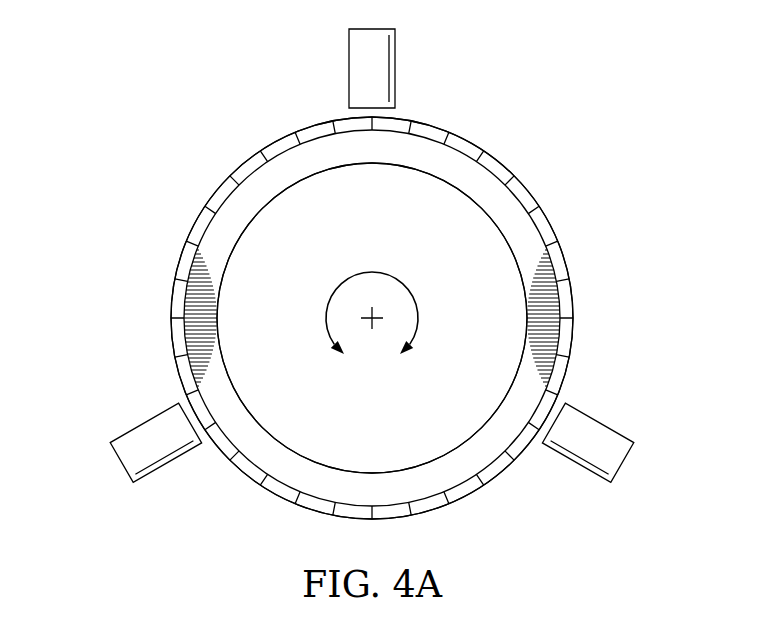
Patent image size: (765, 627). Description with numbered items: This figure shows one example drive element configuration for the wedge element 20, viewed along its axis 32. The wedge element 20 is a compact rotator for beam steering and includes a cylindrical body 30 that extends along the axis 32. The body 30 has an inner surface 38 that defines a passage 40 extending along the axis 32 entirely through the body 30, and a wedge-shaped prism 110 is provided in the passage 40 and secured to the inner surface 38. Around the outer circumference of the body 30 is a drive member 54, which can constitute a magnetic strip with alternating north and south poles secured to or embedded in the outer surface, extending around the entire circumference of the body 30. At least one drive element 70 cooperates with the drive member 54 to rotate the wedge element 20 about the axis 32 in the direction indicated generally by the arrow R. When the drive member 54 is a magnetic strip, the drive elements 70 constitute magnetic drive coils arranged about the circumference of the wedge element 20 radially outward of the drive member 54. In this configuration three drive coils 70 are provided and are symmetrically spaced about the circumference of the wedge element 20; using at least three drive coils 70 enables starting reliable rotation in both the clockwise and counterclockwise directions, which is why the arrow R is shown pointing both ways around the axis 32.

The wedge element 20 is at (122, 212).
The cylindrical body 30 is at (492, 214).
The axis 32 is at (372, 327).
The inner surface 38 is at (373, 472).
The passage 40 is at (308, 438).
The drive member 54 is at (432, 126).
The drive element 70 is at (349, 68).
The wedge-shaped prism 110 is at (396, 222).
The arrow indicating direction of rotation R is at (333, 273).